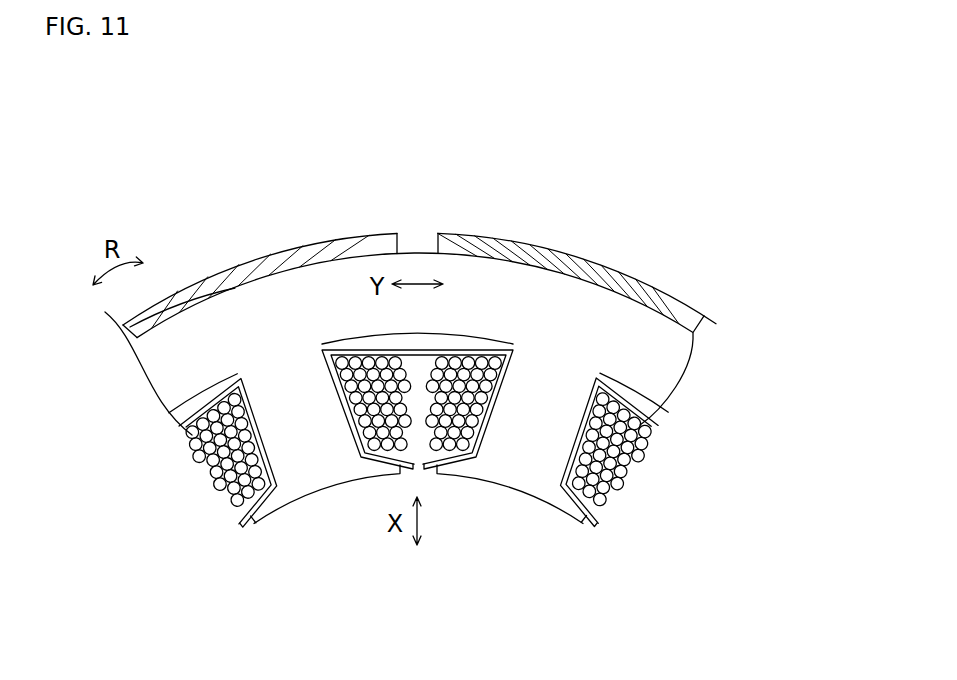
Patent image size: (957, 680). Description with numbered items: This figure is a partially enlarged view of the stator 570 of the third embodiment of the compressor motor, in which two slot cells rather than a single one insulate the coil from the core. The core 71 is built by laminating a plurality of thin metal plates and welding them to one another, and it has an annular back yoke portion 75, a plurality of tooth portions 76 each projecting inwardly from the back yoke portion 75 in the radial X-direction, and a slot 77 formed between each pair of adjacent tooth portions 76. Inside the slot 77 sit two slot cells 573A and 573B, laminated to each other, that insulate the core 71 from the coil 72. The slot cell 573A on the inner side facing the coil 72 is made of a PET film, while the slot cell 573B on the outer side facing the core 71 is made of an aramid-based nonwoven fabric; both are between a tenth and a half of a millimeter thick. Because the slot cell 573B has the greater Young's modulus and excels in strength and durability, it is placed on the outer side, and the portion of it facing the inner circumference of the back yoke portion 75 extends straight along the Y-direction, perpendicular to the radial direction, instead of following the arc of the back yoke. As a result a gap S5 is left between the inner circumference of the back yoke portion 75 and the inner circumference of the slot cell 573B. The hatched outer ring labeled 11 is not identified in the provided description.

The housing 11 is at (213, 272).
The core 71 is at (296, 307).
The coil 72 is at (218, 477).
The back yoke portion 75 is at (672, 300).
The tooth portion 76 is at (307, 437).
The slot 77 is at (420, 368).
The slot cell 573A is at (483, 347).
The slot cell 573B is at (360, 348).
The gap S5 is at (422, 327).
The stator 570 is at (382, 557).